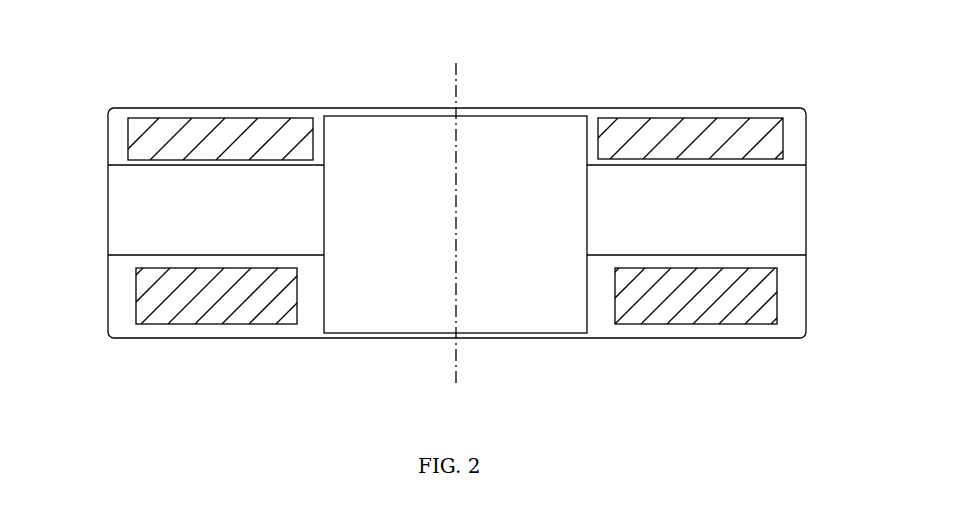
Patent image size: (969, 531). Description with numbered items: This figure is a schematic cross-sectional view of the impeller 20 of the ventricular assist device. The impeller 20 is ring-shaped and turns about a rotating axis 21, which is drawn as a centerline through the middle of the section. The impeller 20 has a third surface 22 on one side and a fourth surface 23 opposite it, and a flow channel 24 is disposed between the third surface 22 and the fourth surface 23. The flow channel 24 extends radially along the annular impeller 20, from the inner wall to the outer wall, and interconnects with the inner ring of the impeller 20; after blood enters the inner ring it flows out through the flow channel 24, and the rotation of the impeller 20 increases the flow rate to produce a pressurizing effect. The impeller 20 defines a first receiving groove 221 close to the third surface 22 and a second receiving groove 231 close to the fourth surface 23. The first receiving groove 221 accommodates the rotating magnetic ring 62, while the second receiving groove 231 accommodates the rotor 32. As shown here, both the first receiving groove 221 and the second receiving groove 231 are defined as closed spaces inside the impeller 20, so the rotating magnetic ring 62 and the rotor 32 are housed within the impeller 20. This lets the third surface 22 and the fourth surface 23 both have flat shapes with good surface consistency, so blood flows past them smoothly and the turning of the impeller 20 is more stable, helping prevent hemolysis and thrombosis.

The impeller 20 is at (786, 39).
The rotating axis 21 is at (456, 92).
The third surface 22 is at (625, 108).
The first receiving groove 221 is at (285, 119).
The rotating magnetic ring 62 is at (217, 137).
The flow channel 24 is at (145, 218).
The fourth surface 23 is at (700, 337).
The second receiving groove 231 is at (280, 325).
The rotor 32 is at (208, 295).